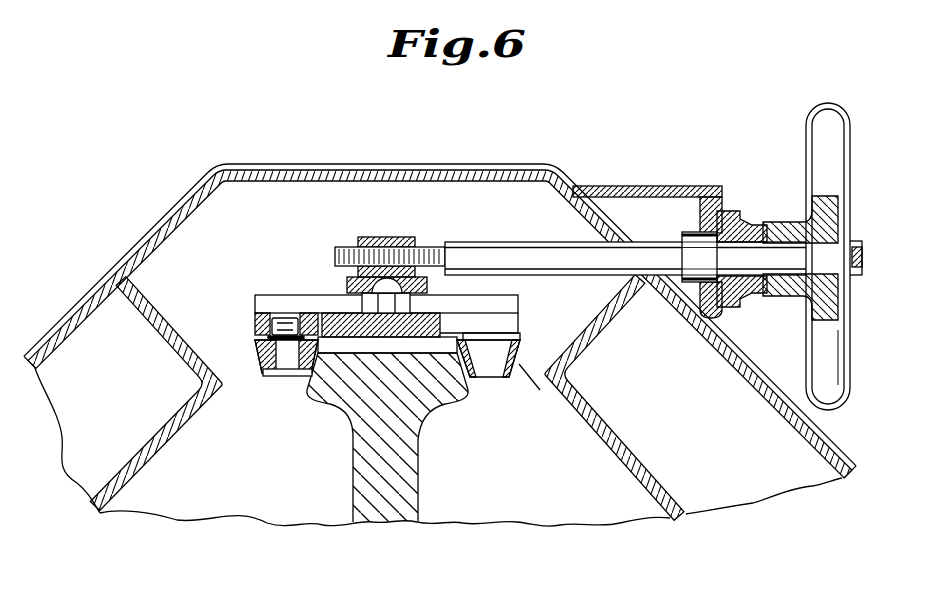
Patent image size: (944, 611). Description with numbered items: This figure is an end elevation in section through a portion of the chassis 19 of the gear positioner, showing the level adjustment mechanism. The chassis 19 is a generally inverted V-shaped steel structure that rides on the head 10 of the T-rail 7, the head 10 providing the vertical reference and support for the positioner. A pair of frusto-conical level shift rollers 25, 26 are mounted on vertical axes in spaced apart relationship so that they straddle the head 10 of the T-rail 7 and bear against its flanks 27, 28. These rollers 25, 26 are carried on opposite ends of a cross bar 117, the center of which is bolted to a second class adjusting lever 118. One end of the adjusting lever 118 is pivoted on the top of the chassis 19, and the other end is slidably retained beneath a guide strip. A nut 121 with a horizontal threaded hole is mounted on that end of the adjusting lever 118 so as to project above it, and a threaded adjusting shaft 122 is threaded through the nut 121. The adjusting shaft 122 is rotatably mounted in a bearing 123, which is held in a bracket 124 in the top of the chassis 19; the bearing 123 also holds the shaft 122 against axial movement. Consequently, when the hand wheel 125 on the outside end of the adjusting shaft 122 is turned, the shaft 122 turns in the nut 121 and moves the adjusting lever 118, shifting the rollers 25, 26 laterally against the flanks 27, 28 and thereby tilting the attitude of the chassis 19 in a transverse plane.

The T-rail 7 is at (352, 497).
The head 10 is at (360, 383).
The chassis 19 is at (222, 158).
The frusto-conical roller 25 is at (260, 368).
The frusto-conical roller 26 is at (497, 374).
The flank 27 is at (308, 390).
The flank 28 is at (463, 384).
The cross bar 117 is at (268, 296).
The adjusting lever 118 is at (349, 285).
The nut 121 is at (395, 238).
The threaded adjusting shaft 122 is at (508, 242).
The bearing 123 is at (742, 208).
The bracket 124 is at (640, 186).
The hand wheel 125 is at (827, 108).